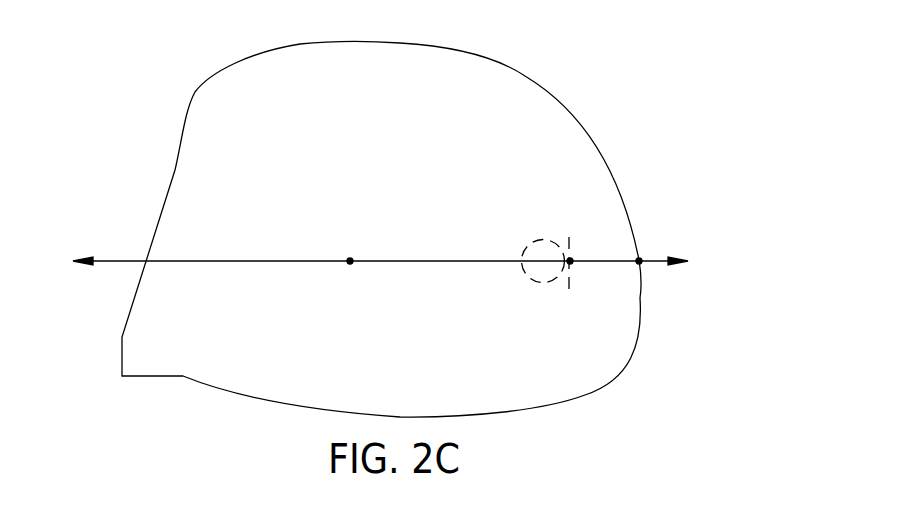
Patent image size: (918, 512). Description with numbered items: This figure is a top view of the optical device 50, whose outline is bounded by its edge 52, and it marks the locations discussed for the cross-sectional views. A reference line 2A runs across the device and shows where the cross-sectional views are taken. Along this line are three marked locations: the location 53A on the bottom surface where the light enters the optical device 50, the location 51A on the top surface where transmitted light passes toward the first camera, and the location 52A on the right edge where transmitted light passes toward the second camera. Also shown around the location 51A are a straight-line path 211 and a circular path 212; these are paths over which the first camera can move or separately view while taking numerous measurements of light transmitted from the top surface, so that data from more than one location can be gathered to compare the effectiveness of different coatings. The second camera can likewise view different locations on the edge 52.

The optical device 50 is at (422, 214).
The edge 52 is at (478, 55).
The reference line 2A is at (115, 257).
The location on the bottom surface 53A is at (350, 257).
The circular path 212 is at (533, 242).
The straight-line path 211 is at (571, 290).
The location on the top surface 51A is at (574, 258).
The location on the right edge 52A is at (643, 257).